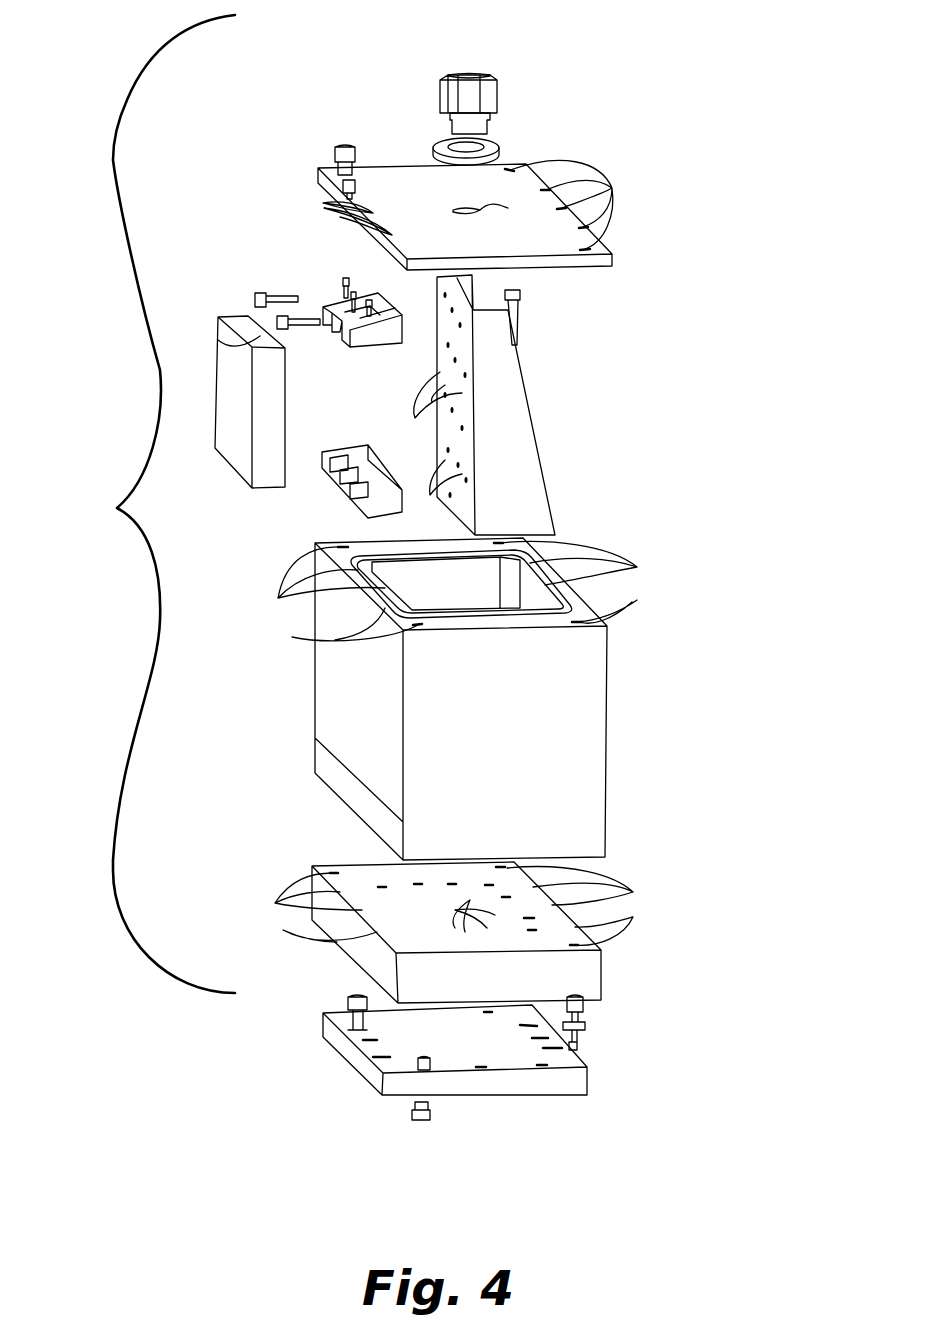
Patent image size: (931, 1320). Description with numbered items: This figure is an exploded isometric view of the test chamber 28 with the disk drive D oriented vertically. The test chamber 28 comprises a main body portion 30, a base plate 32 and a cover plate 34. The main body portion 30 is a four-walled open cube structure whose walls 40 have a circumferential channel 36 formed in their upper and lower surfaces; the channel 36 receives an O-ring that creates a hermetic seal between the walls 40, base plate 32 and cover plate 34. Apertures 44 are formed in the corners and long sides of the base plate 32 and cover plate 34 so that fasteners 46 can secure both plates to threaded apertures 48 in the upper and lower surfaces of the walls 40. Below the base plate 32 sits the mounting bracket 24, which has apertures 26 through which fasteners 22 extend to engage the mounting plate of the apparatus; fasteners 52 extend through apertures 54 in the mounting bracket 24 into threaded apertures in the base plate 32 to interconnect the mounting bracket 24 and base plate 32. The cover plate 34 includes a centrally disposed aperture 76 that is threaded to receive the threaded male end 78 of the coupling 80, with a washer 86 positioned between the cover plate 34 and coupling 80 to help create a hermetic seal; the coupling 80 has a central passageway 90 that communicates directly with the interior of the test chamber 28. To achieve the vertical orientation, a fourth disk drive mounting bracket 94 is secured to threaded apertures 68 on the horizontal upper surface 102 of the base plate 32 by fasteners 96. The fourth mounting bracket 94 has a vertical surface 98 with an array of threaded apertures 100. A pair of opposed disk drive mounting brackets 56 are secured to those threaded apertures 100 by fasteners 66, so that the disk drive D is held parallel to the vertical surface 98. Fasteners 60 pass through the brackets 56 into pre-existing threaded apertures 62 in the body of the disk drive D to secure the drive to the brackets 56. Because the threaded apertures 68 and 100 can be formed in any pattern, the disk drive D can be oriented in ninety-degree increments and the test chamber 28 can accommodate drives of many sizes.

The fasteners 22 is at (350, 1008).
The mounting bracket 24 is at (580, 1082).
The apertures 26 is at (562, 1048).
The test chamber 28 is at (156, 504).
The main body portion 30 is at (667, 772).
The base plate 32 is at (602, 975).
The cover plate 34 is at (572, 265).
The circumferential channel 36 is at (553, 620).
The walls 40 is at (590, 691).
The apertures 44 is at (467, 205).
The fasteners 46 is at (340, 150).
The threaded apertures 48 is at (464, 594).
The fasteners 52 is at (430, 1120).
The apertures 54 is at (367, 1015).
The disk drive mounting brackets 56 is at (380, 338).
The fasteners 60 is at (376, 308).
The threaded apertures 62 is at (253, 327).
The fasteners 66 is at (313, 318).
The threaded apertures 68 is at (446, 918).
The aperture 76 is at (497, 228).
The threaded male end 78 is at (492, 124).
The coupling 80 is at (449, 76).
The washer 86 is at (500, 149).
The central passageway 90 is at (476, 74).
The fourth disk drive mounting bracket 94 is at (532, 480).
The fasteners 96 is at (522, 316).
The vertical surface 98 is at (470, 406).
The threaded apertures 100 is at (355, 463).
The horizontal upper surface 102 is at (362, 882).
The disk drive D is at (228, 383).